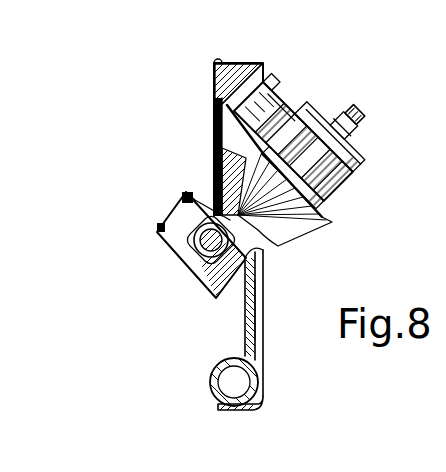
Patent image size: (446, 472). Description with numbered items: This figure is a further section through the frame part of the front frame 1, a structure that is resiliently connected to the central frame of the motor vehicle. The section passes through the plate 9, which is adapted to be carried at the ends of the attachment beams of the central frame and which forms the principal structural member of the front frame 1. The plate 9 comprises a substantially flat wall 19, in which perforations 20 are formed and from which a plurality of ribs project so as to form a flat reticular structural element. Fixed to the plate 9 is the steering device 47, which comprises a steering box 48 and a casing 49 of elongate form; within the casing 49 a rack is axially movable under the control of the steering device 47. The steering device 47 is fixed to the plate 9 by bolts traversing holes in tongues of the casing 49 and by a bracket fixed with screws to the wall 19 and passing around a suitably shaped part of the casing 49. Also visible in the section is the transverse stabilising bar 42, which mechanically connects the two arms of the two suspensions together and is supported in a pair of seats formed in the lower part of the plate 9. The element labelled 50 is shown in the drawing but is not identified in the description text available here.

The front frame 1 is at (288, 338).
The plate 9 is at (265, 292).
The flat wall 19 is at (256, 317).
The perforations 20 is at (214, 148).
The transverse stabilising bar 42 is at (216, 362).
The steering device 47 is at (312, 103).
The steering box 48 is at (334, 176).
The casing 49 is at (190, 200).
The pivot pin 50 is at (194, 252).